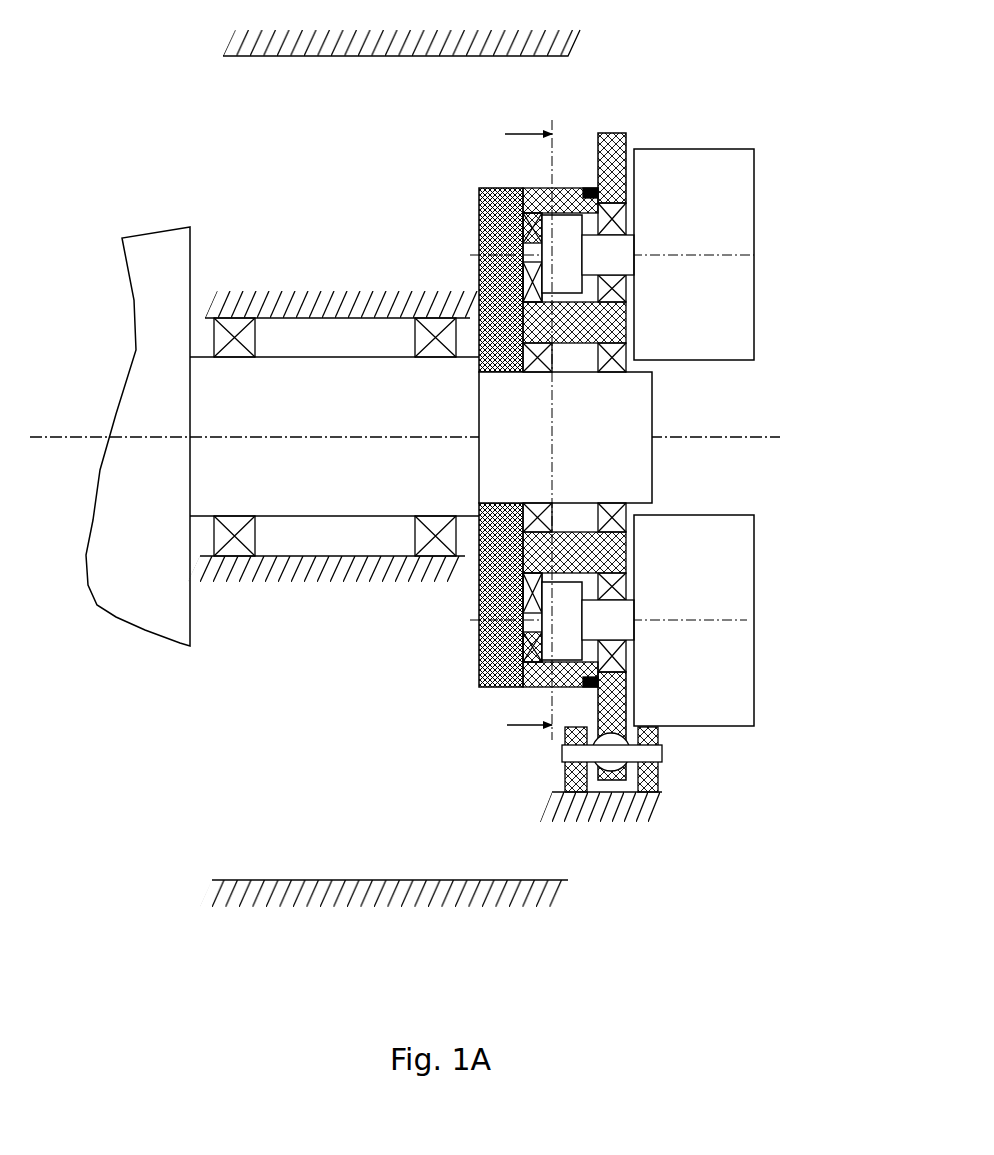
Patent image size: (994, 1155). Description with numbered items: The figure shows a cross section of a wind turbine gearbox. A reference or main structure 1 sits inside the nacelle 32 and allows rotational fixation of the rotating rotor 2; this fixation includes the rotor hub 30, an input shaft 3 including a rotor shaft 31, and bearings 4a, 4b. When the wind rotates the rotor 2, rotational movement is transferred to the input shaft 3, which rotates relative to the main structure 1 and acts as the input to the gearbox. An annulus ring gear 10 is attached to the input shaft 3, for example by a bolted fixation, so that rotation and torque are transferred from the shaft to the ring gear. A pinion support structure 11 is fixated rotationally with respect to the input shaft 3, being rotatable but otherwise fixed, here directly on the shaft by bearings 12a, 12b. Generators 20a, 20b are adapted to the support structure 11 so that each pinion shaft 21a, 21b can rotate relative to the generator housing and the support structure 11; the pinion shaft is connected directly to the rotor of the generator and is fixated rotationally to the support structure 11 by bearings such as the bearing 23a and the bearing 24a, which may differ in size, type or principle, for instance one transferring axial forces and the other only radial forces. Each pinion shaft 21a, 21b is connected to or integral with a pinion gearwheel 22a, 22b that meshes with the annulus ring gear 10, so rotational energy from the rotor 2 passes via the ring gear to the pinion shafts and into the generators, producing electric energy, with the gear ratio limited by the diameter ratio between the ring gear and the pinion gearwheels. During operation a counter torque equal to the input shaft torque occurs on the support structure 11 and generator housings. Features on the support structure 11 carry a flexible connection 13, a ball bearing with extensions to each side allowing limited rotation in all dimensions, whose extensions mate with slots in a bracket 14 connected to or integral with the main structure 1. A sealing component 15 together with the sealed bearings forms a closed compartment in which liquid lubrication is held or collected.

The main structure 1 is at (334, 350).
The rotor 2 is at (126, 397).
The input shaft 3 is at (565, 437).
The bearing 4a is at (239, 543).
The bearing 4b is at (433, 547).
The annulus ring gear 10 is at (500, 662).
The pinion support structure 11 is at (613, 167).
The bearing 12a is at (513, 560).
The bearing 12b is at (612, 360).
The flexible connection 13 is at (611, 752).
The bracket 14 is at (650, 780).
The sealing component 15 is at (578, 188).
The generator 20a is at (690, 215).
The generator 20b is at (698, 665).
The pinion shaft 21a is at (620, 249).
The pinion shaft 21b is at (630, 621).
The pinion gearwheel 22a is at (562, 235).
The pinion gearwheel 22b is at (567, 606).
The bearing 23a is at (610, 227).
The bearing 24a is at (533, 235).
The rotor hub 30 is at (150, 409).
The rotor shaft 31 is at (232, 409).
The nacelle 32 is at (522, 42).